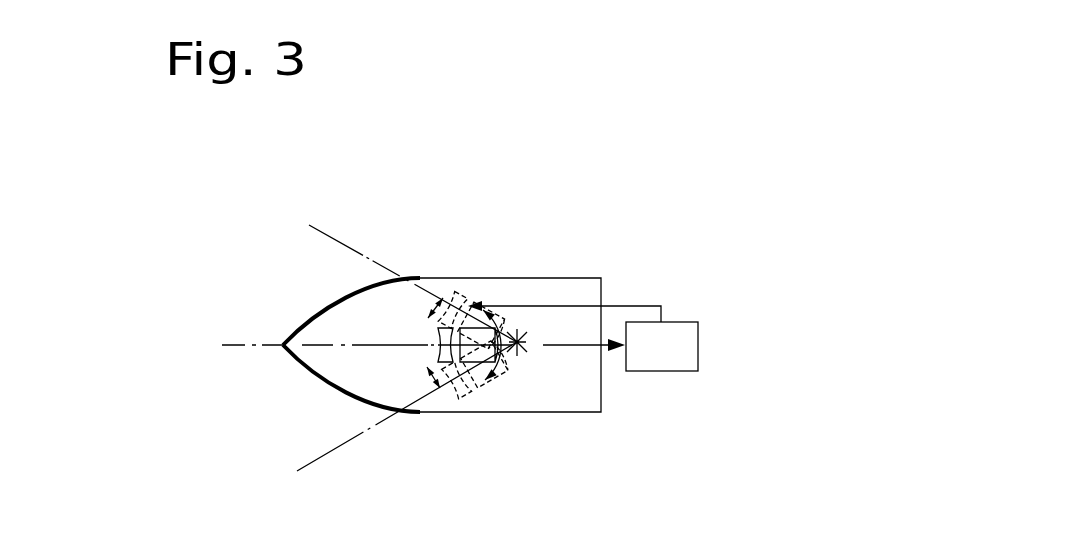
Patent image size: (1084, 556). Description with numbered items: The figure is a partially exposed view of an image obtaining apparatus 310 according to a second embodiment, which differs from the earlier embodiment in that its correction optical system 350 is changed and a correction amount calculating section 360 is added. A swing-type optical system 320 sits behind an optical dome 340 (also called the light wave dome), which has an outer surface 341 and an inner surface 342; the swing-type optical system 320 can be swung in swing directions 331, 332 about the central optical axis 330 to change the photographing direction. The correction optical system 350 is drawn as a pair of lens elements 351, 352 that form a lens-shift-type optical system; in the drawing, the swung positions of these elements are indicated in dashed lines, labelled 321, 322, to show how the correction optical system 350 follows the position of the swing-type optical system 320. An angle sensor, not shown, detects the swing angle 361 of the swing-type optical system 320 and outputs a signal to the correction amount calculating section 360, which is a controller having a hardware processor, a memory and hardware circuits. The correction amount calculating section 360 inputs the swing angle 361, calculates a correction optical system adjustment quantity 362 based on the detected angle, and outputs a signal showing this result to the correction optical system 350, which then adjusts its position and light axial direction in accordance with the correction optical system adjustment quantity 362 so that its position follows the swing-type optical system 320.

The image obtaining apparatus 310 is at (281, 304).
The swing-type optical system 320 is at (527, 288).
The swing-type optical system lens (first position) 321 is at (475, 312).
The swing-type optical system lens (second position) 322 is at (512, 317).
The optical axis 330 is at (245, 347).
The swing direction 331 is at (327, 226).
The swing direction 332 is at (328, 457).
The optical dome 340 is at (340, 393).
The outer surface 341 is at (341, 293).
The inner surface 342 is at (357, 294).
The correction optical system 350 is at (492, 369).
The concave lens of correction optical system 351 is at (445, 326).
The convex lens of correction optical system 352 is at (432, 361).
The correction amount calculating section 360 is at (683, 372).
The swing angle 361 is at (563, 346).
The correction optical system adjustment quantity 362 is at (643, 280).